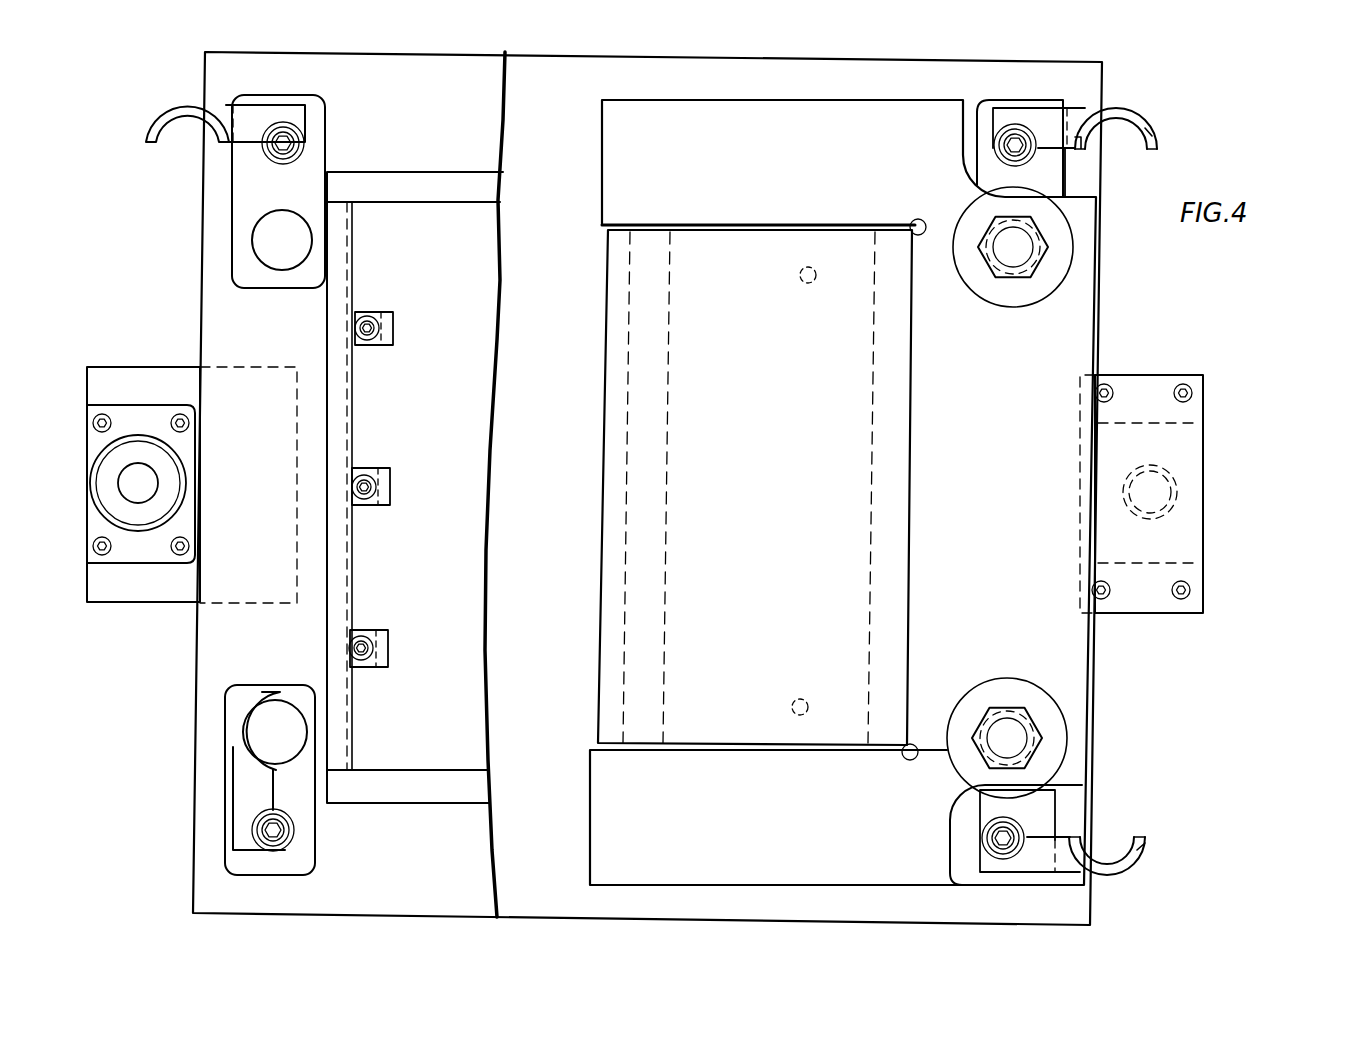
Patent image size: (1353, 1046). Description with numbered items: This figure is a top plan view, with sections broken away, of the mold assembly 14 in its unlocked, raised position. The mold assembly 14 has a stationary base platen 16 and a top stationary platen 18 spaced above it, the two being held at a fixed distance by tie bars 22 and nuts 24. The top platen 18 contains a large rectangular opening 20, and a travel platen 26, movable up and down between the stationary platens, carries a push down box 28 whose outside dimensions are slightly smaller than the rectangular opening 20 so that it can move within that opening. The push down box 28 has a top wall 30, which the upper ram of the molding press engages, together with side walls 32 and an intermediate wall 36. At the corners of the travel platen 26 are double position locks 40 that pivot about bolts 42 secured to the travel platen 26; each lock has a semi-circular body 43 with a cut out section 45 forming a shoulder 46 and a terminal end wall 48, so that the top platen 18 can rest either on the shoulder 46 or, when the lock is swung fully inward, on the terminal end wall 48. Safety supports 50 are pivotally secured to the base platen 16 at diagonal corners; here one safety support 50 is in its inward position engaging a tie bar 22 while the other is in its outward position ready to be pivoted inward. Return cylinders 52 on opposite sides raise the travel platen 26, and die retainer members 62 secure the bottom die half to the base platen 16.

The mold assembly 14 is at (1160, 312).
The stationary base platen 16 is at (420, 886).
The top stationary platen 18 is at (600, 786).
The rectangular opening 20 is at (742, 240).
The tie bar 22 is at (266, 234).
The nut 24 is at (1016, 278).
The travel platen 26 is at (553, 689).
The push down box 28 is at (598, 340).
The top wall 30 is at (686, 254).
The side wall 32 is at (870, 404).
The intermediate wall 36 is at (668, 424).
The double position lock 40 is at (1146, 108).
The bolt 42 is at (292, 143).
The semi-circular body 43 is at (1101, 112).
The cut out section 45 is at (1156, 142).
The shoulder 46 is at (1148, 128).
The terminal end wall 48 is at (1094, 108).
The safety support 50 is at (143, 138).
The return cylinder 52 is at (116, 484).
The die retainer member 62 is at (396, 328).